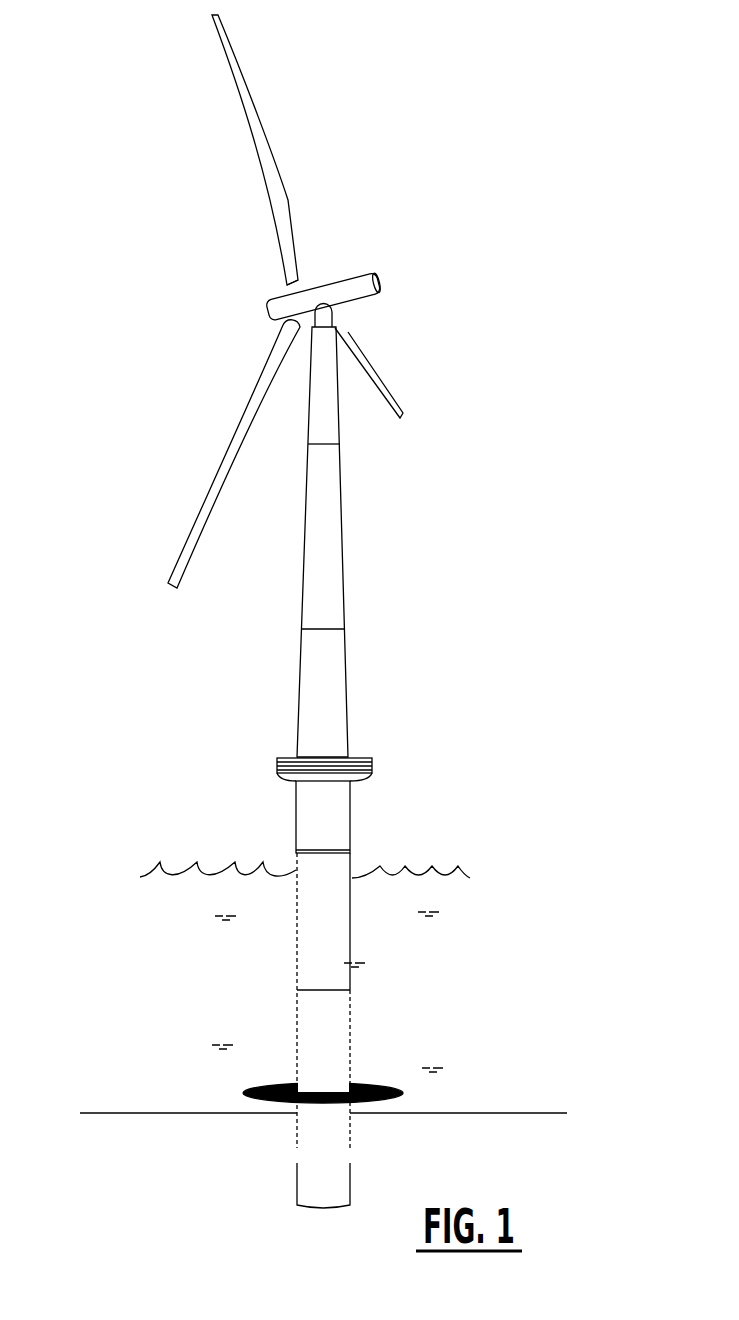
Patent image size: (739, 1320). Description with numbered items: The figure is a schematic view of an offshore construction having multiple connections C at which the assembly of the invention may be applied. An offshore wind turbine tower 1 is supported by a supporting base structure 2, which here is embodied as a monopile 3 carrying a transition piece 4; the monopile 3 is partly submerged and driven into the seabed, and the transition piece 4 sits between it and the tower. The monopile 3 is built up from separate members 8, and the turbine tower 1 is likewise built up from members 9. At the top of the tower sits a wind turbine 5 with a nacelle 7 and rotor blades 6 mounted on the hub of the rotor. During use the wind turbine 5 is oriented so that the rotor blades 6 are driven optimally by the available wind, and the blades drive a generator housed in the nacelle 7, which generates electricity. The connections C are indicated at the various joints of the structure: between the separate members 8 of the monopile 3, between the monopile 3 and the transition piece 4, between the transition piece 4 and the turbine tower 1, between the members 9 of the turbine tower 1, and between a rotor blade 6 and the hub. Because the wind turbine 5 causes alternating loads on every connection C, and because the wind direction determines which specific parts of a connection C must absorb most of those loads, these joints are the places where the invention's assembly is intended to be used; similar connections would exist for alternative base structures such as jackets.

The offshore wind turbine tower 1 is at (123, 480).
The supporting base structure 2 is at (523, 870).
The monopile 3 is at (520, 985).
The transition piece 4 is at (403, 800).
The wind turbine 5 is at (330, 241).
The rotor blade 6 is at (247, 110).
The nacelle 7 is at (360, 287).
The separate members of the monopile 8 is at (327, 912).
The members of the turbine tower 9 is at (328, 408).
The connection C is at (252, 277).